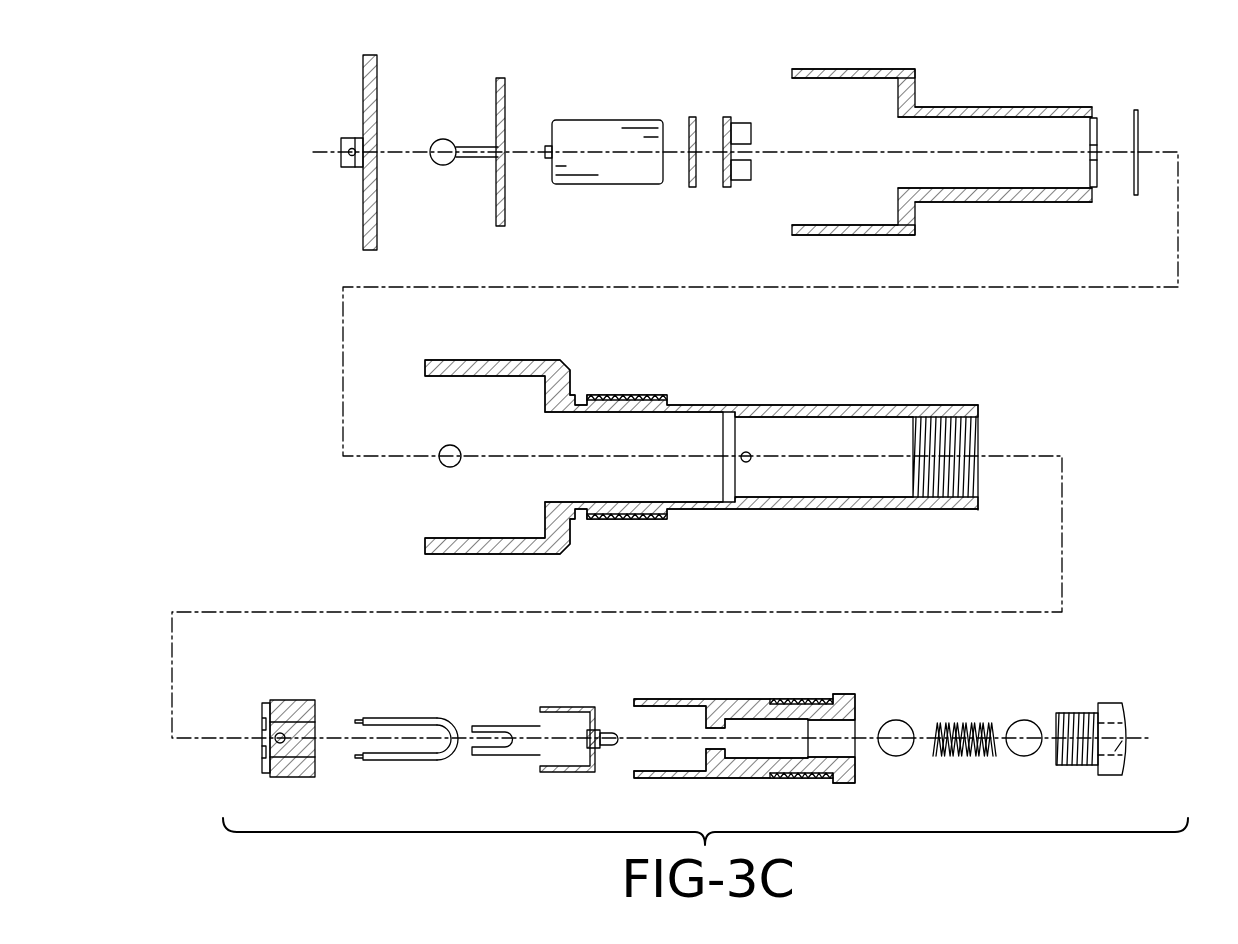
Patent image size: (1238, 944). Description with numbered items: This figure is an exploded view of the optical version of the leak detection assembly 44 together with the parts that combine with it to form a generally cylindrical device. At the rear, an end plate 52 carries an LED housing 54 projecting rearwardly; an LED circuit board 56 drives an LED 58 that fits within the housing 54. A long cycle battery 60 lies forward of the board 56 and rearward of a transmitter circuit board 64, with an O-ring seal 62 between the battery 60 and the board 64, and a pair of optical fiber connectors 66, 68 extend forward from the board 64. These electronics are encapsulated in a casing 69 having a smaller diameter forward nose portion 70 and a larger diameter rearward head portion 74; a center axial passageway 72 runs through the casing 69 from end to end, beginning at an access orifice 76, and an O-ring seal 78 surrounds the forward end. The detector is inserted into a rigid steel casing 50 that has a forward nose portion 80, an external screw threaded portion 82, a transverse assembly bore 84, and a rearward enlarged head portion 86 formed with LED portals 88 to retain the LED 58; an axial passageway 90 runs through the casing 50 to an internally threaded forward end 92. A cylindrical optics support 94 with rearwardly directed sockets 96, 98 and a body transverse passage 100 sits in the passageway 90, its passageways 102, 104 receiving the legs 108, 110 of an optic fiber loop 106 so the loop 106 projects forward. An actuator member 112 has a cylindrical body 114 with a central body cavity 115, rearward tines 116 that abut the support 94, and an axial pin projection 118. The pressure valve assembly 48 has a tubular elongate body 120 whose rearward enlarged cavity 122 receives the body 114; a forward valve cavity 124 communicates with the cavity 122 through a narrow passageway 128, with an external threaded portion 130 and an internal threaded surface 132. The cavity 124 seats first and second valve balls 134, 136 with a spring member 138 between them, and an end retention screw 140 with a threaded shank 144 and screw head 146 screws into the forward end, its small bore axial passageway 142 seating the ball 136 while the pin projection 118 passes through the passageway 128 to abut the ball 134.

The leak detection assembly 44 is at (143, 200).
The pressure valve assembly 48 is at (753, 725).
The casing 50 is at (706, 449).
The end plate 52 is at (363, 68).
The LED housing 54 is at (347, 138).
The LED circuit board 56 is at (505, 90).
The LED 58 is at (440, 148).
The long cycle battery 60 is at (590, 137).
The O-ring seal 62 is at (689, 125).
The transmitter circuit board 64 is at (727, 165).
The optical fiber connector 66 is at (745, 128).
The optical fiber connector 68 is at (745, 172).
The casing 69 is at (963, 126).
The forward nose portion 70 is at (958, 107).
The center axial passageway 72 is at (1035, 135).
The rearward head portion 74 is at (865, 69).
The access orifice 76 is at (1095, 155).
The O-ring seal 78 is at (1138, 112).
The forward nose portion 80 is at (928, 405).
The external screw threaded portion 82 is at (640, 395).
The transverse assembly bore 84 is at (581, 395).
The rearward enlarged head portion 86 is at (505, 360).
The LED portal 88 is at (448, 462).
The axial passageway 90 is at (830, 438).
The internally threaded forward end 92 is at (950, 422).
The cylindrical optics support 94 is at (272, 725).
The optics connector socket 96 is at (262, 716).
The optics connector socket 98 is at (262, 762).
The body transverse passage 100 is at (280, 745).
The optics receiving passageway 102 is at (312, 722).
The optics receiving passageway 104 is at (315, 760).
The optic fiber loop 106 is at (414, 725).
The leg 108 is at (392, 718).
The leg 110 is at (392, 760).
The actuator member 112 is at (551, 725).
The cylindrical body 114 is at (570, 707).
The central body cavity 115 is at (560, 755).
The tine 116 is at (482, 726).
The pin projection 118 is at (607, 748).
The tubular elongate body 120 is at (648, 699).
The rearward enlarged cavity 122 is at (668, 752).
The forward elongate valve cavity 124 is at (770, 745).
The narrow passageway 128 is at (712, 735).
The external threaded portion 130 is at (790, 699).
The internal threaded surface 132 is at (840, 752).
The first valve ball 134 is at (893, 730).
The second valve ball 136 is at (1022, 730).
The spring member 138 is at (963, 756).
The end retention screw 140 is at (1140, 714).
The small bore axial passageway 142 is at (1130, 736).
The threaded shank 144 is at (1075, 713).
The screw head 146 is at (1125, 758).